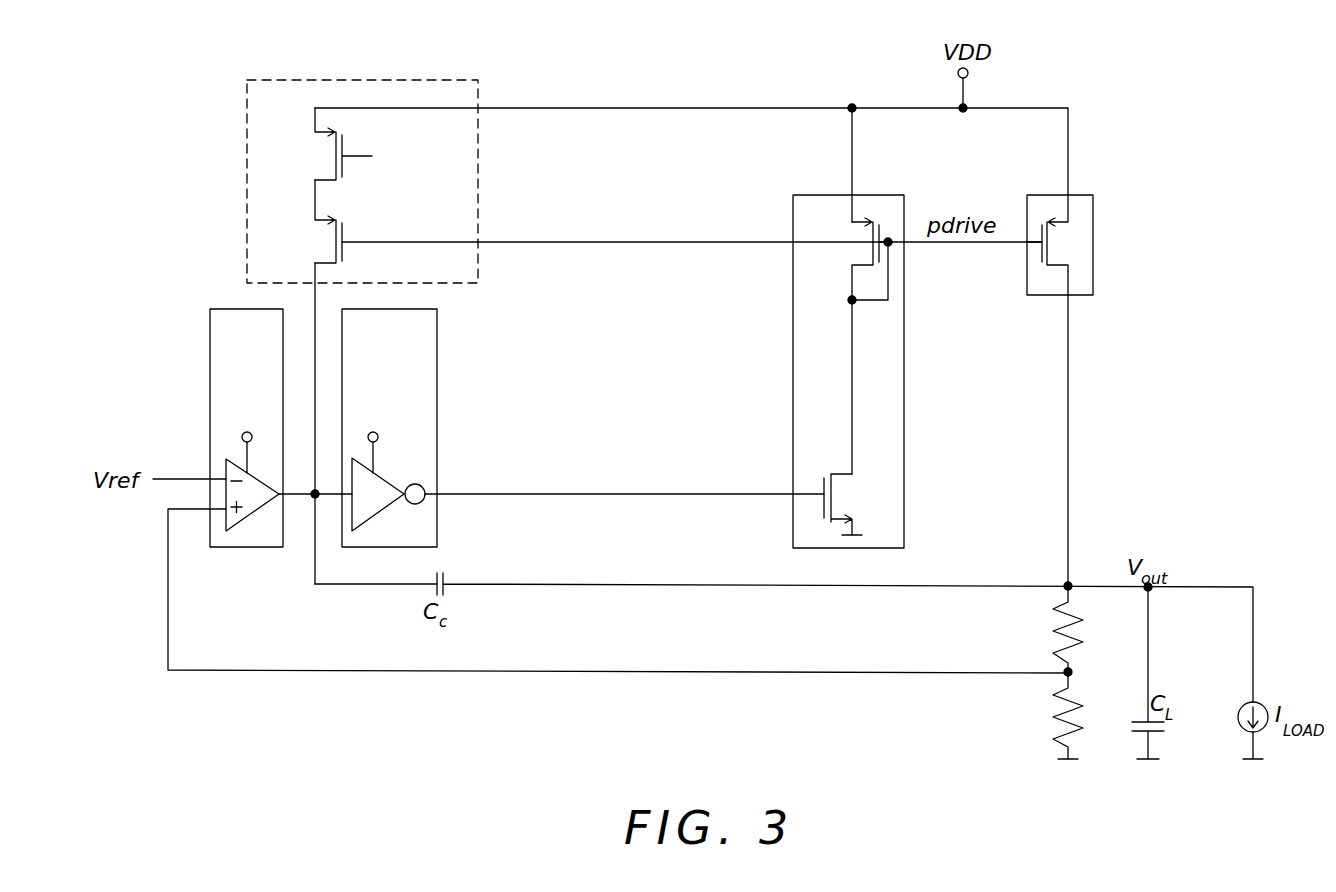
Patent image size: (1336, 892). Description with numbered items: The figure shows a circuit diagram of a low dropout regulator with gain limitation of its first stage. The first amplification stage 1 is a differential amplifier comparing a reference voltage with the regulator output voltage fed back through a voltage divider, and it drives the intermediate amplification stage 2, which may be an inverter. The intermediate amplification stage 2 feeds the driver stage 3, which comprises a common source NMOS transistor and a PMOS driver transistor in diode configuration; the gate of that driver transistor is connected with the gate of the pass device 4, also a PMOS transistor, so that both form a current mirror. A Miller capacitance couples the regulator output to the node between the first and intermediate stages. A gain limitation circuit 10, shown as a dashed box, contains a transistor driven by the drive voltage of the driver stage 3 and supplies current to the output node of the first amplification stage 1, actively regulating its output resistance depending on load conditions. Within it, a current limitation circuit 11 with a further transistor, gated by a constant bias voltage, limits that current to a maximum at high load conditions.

The first amplification stage 1 is at (210, 340).
The intermediate amplification stage 2 is at (437, 340).
The driver stage 3 is at (793, 280).
The pass device 4 is at (1097, 242).
The gain limitation circuit 10 is at (375, 78).
The current limitation circuit 11 is at (268, 155).